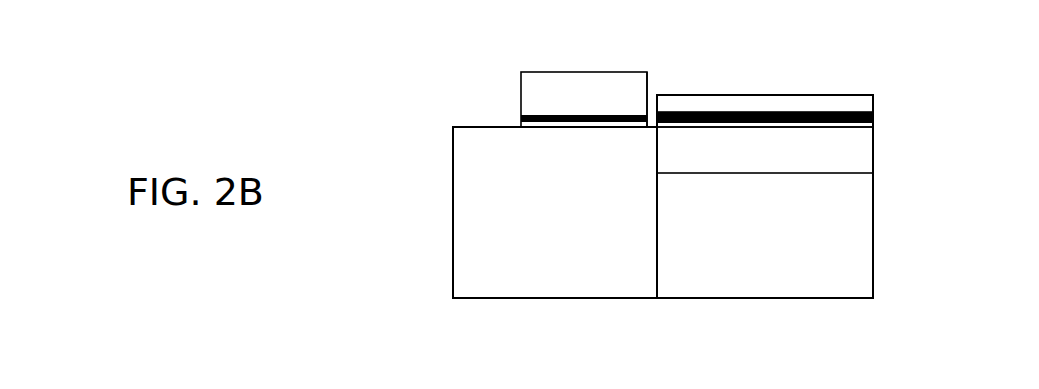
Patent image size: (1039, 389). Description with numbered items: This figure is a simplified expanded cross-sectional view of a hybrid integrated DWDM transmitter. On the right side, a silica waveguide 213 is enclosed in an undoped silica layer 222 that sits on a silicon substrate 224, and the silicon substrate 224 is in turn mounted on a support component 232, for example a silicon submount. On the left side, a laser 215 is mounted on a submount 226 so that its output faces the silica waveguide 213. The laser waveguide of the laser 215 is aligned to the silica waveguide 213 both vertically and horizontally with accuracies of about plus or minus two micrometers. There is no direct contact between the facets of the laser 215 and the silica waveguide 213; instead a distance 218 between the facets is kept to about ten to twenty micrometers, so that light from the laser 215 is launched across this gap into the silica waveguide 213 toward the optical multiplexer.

The silica waveguide 213 is at (757, 104).
The laser 215 is at (498, 98).
The distance 218 is at (655, 84).
The undoped silica layer 222 is at (832, 102).
The silicon substrate 224 is at (855, 142).
The submount 226 is at (576, 240).
The support component 232 is at (800, 240).